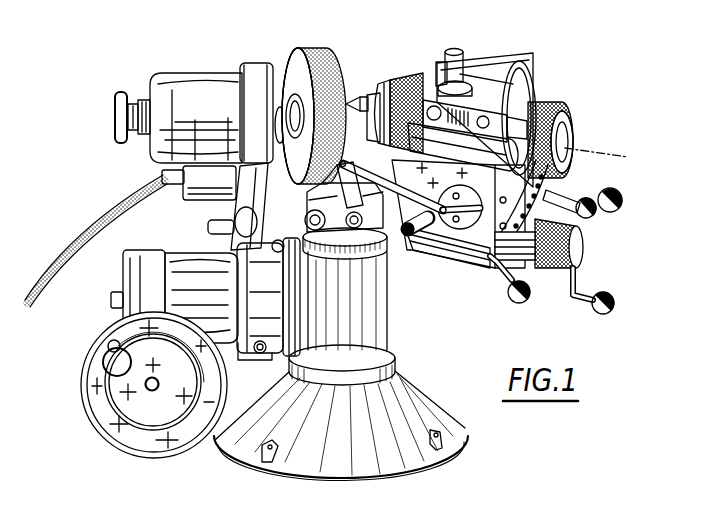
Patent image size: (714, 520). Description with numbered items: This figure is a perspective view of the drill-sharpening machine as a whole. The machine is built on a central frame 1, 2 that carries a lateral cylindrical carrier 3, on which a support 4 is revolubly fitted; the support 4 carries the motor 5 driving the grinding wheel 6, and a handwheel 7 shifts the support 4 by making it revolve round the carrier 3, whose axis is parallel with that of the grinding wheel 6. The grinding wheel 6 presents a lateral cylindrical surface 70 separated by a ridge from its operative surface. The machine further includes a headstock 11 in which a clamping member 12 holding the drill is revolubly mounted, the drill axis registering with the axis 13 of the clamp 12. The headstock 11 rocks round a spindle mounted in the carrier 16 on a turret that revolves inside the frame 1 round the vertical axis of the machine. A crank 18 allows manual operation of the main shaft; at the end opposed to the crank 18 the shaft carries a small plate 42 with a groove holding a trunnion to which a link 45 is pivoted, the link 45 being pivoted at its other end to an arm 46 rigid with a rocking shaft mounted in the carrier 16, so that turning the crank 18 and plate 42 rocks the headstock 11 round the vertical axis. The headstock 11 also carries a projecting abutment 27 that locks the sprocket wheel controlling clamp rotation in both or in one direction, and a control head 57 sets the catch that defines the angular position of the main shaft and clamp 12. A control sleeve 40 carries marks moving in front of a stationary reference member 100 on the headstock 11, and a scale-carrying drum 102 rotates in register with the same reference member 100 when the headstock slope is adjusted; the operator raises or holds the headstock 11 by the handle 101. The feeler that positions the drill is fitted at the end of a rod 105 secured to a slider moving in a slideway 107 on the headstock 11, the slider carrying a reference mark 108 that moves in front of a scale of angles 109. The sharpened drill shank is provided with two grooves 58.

The central frame 1 is at (380, 322).
The central frame 2 is at (345, 470).
The lateral cylindrical carrier 3 is at (192, 262).
The support 4 is at (258, 185).
The motor 5 is at (197, 90).
The grinding wheel 6 is at (322, 100).
The handwheel 7 is at (100, 405).
The headstock 11 is at (530, 92).
The clamping member 12 is at (540, 106).
The axis 13 is at (592, 147).
The carrier 16 is at (409, 234).
The crank 18 is at (558, 206).
The projecting abutment 27 is at (454, 58).
The control sleeve 40 is at (497, 262).
The small plate 42 is at (467, 229).
The link 45 is at (411, 188).
The arm 46 is at (322, 186).
The control head 57 is at (414, 250).
The grooves 58 is at (362, 99).
The lateral cylindrical surface 70 is at (315, 44).
The stationary reference member 100 is at (541, 264).
The handle 101 is at (521, 303).
The scale-carrying drum 102 is at (530, 262).
The rod 105 is at (388, 132).
The slideway 107 is at (436, 80).
The reference mark 108 is at (519, 124).
The scale of angles 109 is at (452, 115).